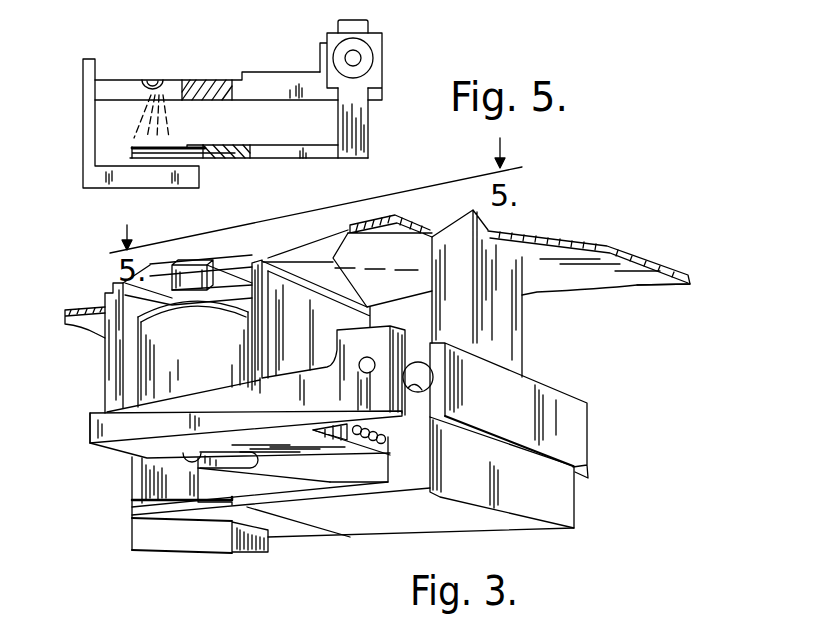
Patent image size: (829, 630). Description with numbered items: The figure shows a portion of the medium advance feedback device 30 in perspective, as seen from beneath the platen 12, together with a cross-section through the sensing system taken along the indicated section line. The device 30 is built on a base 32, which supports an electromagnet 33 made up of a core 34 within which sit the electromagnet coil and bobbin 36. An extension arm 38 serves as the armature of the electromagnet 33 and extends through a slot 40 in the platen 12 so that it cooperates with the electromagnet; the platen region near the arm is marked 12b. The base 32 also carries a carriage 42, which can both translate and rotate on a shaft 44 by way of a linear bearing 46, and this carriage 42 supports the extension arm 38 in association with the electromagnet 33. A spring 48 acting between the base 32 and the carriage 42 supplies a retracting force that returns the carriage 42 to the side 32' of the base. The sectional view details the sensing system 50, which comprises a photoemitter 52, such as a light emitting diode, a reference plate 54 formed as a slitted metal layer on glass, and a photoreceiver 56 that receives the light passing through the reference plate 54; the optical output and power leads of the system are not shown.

In FIG. 3, the platen 12 is at (662, 260).
In FIG. 3, the arm tip 12b is at (637, 277).
In FIG. 3, the medium advance feedback device 30 is at (610, 378).
In FIG. 5, the base 32 is at (216, 67).
In FIG. 3, the base 32 is at (246, 419).
In FIG. 3, the side of the base 32' is at (332, 370).
In FIG. 3, the electromagnet 33 is at (82, 404).
In FIG. 3, the core 34 is at (110, 368).
In FIG. 3, the electromagnet coil and bobbin 36 is at (208, 367).
In FIG. 3, the extension arm 38 is at (278, 252).
In FIG. 3, the slot 40 is at (418, 222).
In FIG. 5, the carriage 42 is at (353, 125).
In FIG. 3, the carriage 42 is at (553, 491).
In FIG. 5, the shaft 44 is at (358, 63).
In FIG. 3, the shaft 44 is at (418, 393).
In FIG. 3, the linear bearing 46 is at (423, 380).
In FIG. 3, the spring 48 is at (373, 447).
In FIG. 5, the sensing system 50 is at (78, 173).
In FIG. 3, the sensing system 50 is at (185, 565).
In FIG. 5, the photoemitter 52 is at (171, 90).
In FIG. 3, the photoemitter 52 is at (187, 459).
In FIG. 5, the reference plate 54 is at (180, 136).
In FIG. 3, the reference plate 54 is at (150, 527).
In FIG. 5, the photoreceiver 56 is at (182, 178).
In FIG. 3, the photoreceiver 56 is at (222, 530).